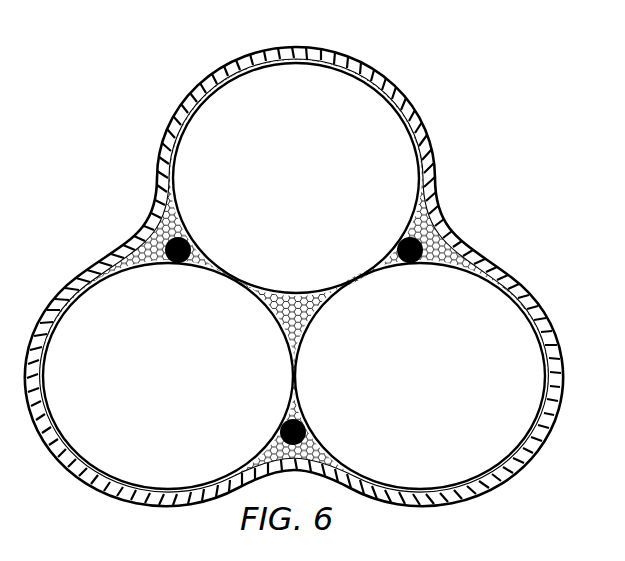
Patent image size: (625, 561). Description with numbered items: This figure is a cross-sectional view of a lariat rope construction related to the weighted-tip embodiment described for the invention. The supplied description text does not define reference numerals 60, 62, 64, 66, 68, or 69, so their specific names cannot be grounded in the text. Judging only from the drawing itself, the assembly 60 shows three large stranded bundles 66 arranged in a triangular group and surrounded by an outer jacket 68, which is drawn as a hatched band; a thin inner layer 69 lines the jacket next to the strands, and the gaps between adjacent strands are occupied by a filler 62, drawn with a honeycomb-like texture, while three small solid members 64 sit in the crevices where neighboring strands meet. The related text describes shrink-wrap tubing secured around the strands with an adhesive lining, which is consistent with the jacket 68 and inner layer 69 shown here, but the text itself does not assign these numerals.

The cable assembly 60 is at (298, 273).
The filler material 62 is at (148, 223).
The strength member 64 is at (192, 263).
The cable subunit 66 is at (512, 448).
The outer jacket 68 is at (272, 56).
The inner binder layer 69 is at (188, 125).